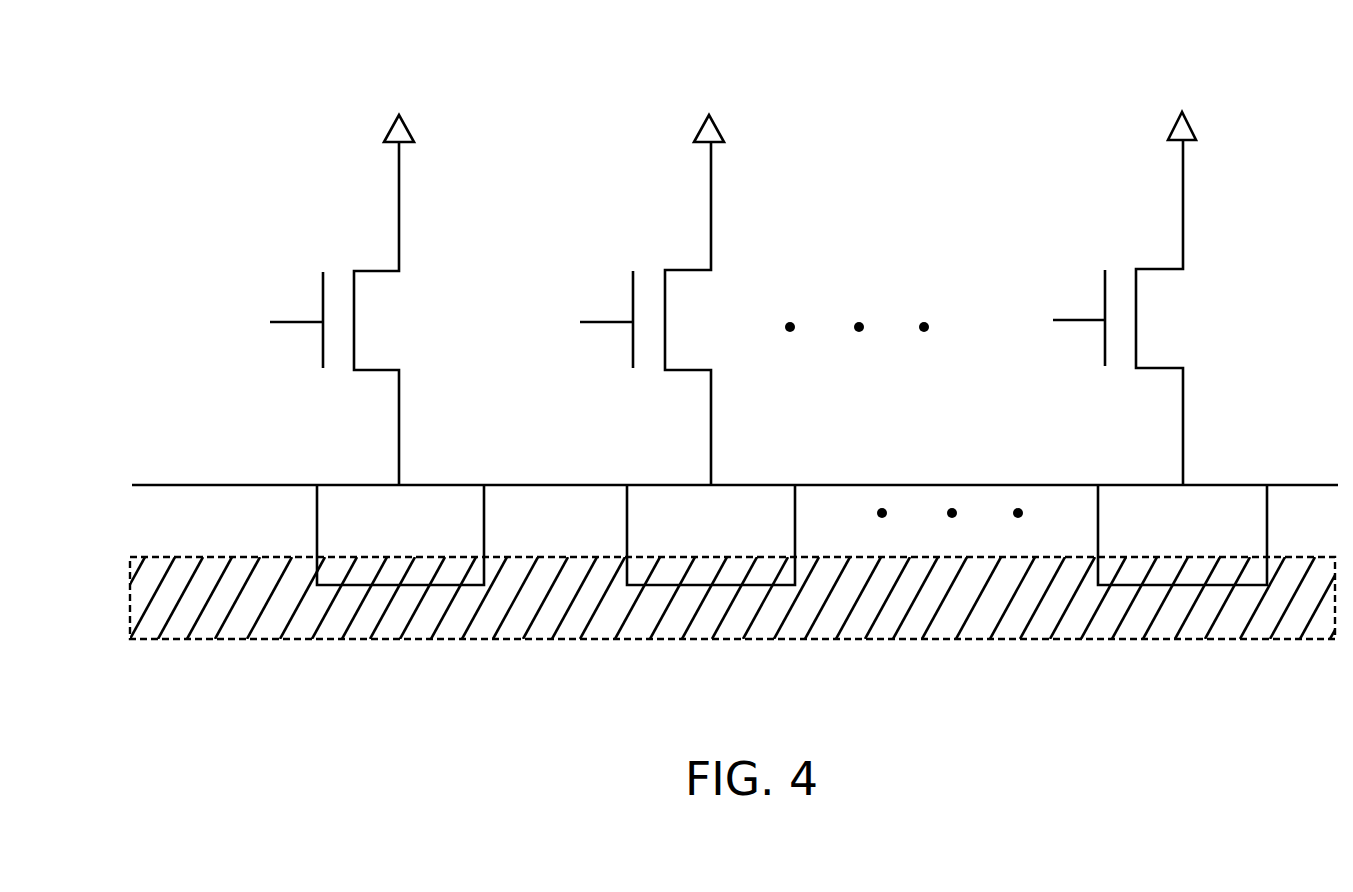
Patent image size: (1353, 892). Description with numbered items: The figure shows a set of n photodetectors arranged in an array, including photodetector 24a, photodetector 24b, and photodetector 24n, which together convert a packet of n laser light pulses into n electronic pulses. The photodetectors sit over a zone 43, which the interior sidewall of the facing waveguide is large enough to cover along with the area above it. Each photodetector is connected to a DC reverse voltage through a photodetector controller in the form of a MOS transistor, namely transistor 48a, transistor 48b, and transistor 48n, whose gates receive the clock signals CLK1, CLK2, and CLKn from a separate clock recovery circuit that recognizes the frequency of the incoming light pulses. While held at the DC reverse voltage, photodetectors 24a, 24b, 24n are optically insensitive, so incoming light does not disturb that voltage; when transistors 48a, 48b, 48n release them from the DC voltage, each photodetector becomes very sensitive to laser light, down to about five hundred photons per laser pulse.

The transistor 48a is at (307, 282).
The transistor 48b is at (616, 282).
The transistor 48n is at (1089, 282).
The photodetector 24a is at (432, 525).
The photodetector 24b is at (748, 525).
The photodetector 24n is at (1212, 525).
The zone 43 is at (900, 622).